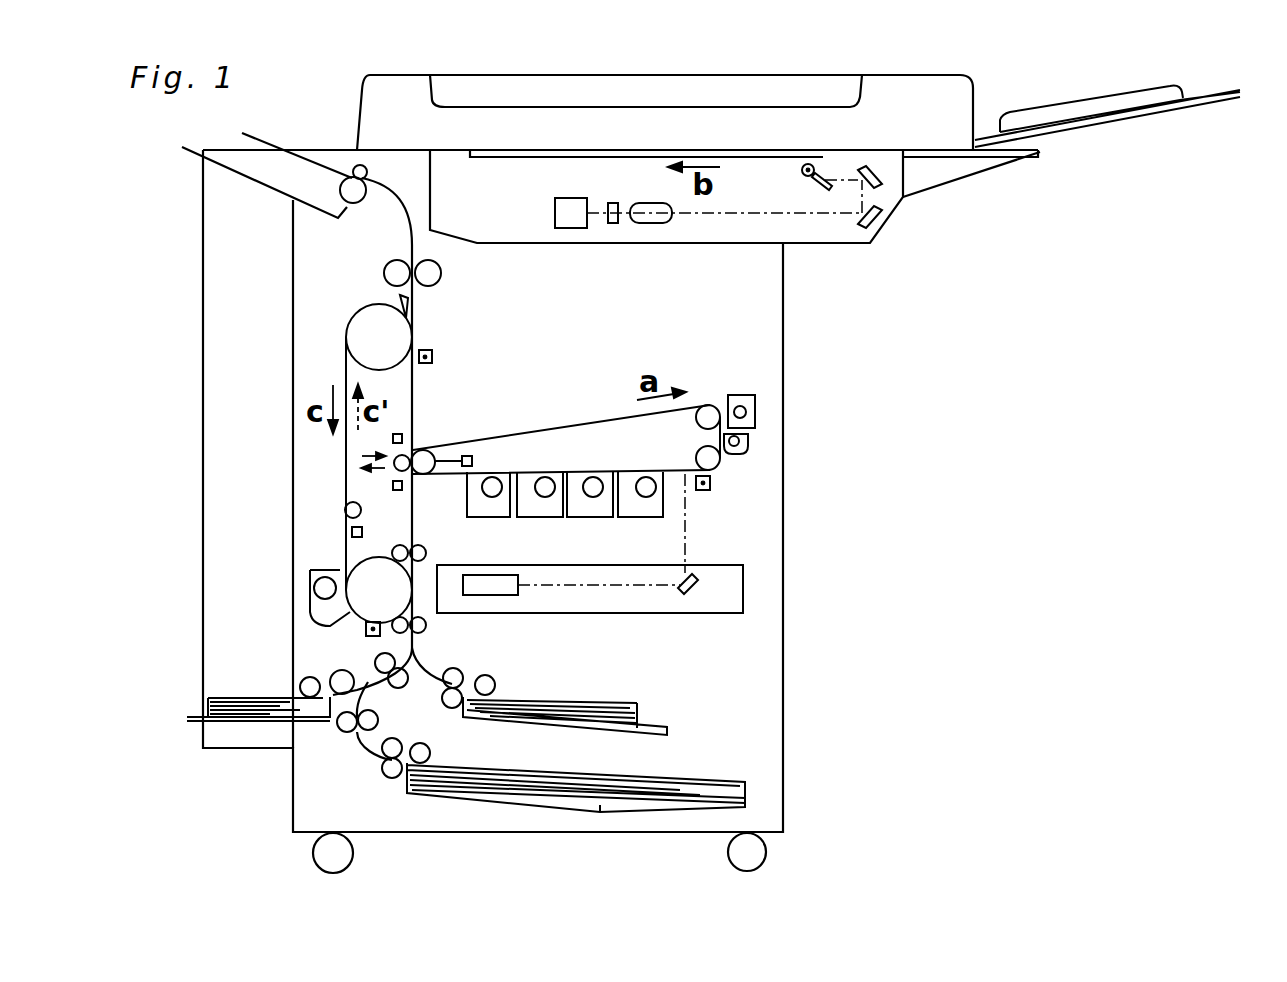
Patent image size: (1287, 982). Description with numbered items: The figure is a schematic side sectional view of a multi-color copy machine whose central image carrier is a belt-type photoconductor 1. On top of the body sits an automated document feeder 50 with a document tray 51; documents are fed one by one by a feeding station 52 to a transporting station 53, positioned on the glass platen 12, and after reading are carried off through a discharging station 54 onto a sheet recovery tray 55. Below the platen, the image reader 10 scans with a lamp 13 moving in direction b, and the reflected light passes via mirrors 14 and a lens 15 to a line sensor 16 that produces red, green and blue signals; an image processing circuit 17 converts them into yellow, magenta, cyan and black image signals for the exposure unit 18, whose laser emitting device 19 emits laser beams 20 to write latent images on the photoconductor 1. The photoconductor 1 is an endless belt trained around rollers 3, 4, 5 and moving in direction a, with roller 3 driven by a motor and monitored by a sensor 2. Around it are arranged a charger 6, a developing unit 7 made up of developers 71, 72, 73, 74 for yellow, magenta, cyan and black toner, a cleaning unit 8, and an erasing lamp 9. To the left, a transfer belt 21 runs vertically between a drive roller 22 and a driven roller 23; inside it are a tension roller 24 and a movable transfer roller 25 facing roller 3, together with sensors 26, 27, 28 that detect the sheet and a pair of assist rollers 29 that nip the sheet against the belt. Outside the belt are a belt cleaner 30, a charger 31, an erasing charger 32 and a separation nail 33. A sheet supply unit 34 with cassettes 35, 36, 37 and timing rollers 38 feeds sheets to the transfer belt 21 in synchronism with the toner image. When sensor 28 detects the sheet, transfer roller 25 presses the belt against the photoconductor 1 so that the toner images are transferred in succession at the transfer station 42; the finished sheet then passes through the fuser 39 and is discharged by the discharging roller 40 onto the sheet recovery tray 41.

The photoconductor 1 is at (597, 410).
The sensor 2 is at (473, 460).
The roller 3 is at (440, 447).
The roller 4 is at (700, 456).
The roller 5 is at (708, 408).
The charger 6 is at (703, 491).
The developing unit 7 is at (663, 510).
The cleaning unit 8 is at (745, 392).
The erasing lamp 9 is at (744, 454).
The image reader 10 is at (535, 245).
The glass platen 12 is at (500, 157).
The lamp 13 is at (800, 172).
The mirrors 14 is at (858, 226).
The lens 15 is at (660, 223).
The line sensor 16 is at (613, 223).
The image processing circuit 17 is at (572, 228).
The exposure unit 18 is at (705, 600).
The laser emitting device 19 is at (510, 595).
The laser beams 20 is at (590, 587).
The transfer belt 21 is at (345, 357).
The drive roller 22 is at (375, 318).
The driven roller 23 is at (362, 570).
The tension roller 24 is at (346, 503).
The transfer roller 25 is at (395, 458).
The sensor 26 is at (351, 532).
The sensor 27 is at (400, 435).
The sensor 28 is at (392, 486).
The assist rollers 29 is at (425, 550).
The belt cleaner 30 is at (310, 590).
The charger 31 is at (366, 630).
The erasing charger 32 is at (434, 356).
The separation nail 33 is at (400, 297).
The sheet supply unit 34 is at (441, 795).
The cassette 35 is at (265, 722).
The cassette 36 is at (510, 790).
The cassette 37 is at (623, 705).
The timing rollers 38 is at (426, 627).
The fuser 39 is at (440, 284).
The discharging roller 40 is at (368, 170).
The sheet recovery tray 41 is at (276, 180).
The transfer station 42 is at (423, 460).
The automated document feeder 50 is at (690, 72).
The document tray 51 is at (1065, 102).
The feeding station 52 is at (905, 105).
The transporting station 53 is at (557, 128).
The discharging station 54 is at (397, 118).
The sheet recovery tray 55 is at (478, 100).
The developer 71 is at (645, 510).
The developer 72 is at (594, 510).
The developer 73 is at (543, 510).
The developer 74 is at (490, 510).